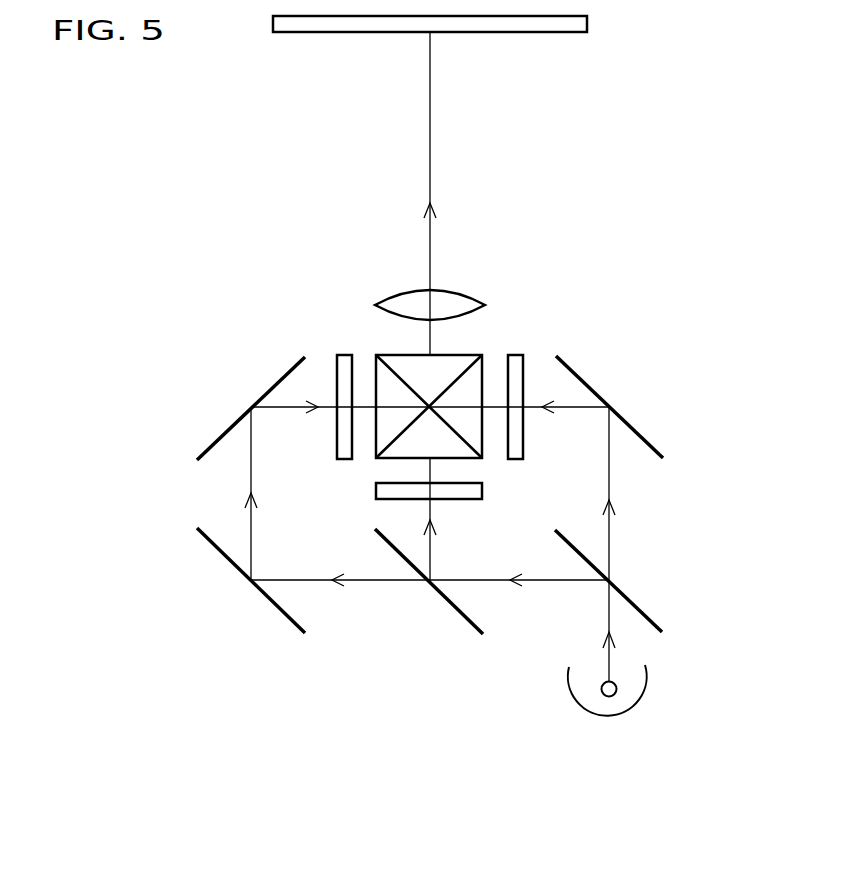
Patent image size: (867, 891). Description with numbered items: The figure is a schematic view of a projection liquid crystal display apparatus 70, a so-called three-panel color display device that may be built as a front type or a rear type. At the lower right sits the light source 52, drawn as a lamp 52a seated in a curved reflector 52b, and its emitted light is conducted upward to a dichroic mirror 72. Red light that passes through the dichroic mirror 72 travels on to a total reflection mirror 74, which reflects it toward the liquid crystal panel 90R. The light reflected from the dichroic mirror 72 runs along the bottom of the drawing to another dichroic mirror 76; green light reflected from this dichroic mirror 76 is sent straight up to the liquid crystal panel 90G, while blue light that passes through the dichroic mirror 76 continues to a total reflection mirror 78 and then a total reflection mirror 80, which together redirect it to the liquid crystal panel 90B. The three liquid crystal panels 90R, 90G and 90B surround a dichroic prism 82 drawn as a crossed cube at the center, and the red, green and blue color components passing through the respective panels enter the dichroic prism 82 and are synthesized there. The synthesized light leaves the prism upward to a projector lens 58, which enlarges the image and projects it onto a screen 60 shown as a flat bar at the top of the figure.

The light source 52 is at (617, 744).
The lamp 52a is at (601, 698).
The reflector 52b is at (557, 780).
The projector lens 58 is at (455, 296).
The screen 60 is at (588, 22).
The projection liquid crystal display apparatus 70 is at (172, 690).
The dichroic mirror 72 is at (637, 598).
The total reflection mirror 74 is at (623, 417).
The dichroic mirror 76 is at (458, 612).
The total reflection mirror 78 is at (278, 612).
The total reflection mirror 80 is at (277, 378).
The dichroic prism 82 is at (376, 452).
The liquid crystal panel 90B is at (345, 355).
The liquid crystal panel 90G is at (470, 500).
The liquid crystal panel 90R is at (514, 353).